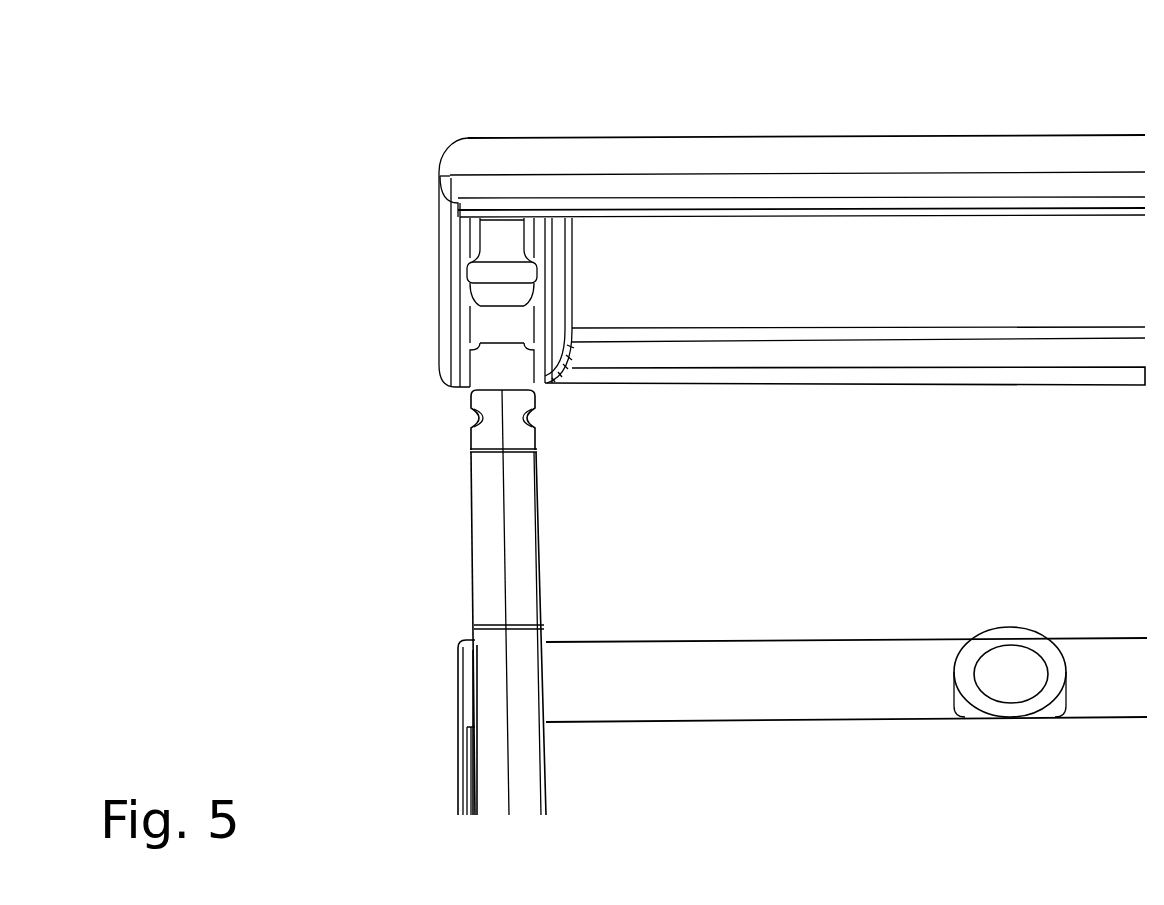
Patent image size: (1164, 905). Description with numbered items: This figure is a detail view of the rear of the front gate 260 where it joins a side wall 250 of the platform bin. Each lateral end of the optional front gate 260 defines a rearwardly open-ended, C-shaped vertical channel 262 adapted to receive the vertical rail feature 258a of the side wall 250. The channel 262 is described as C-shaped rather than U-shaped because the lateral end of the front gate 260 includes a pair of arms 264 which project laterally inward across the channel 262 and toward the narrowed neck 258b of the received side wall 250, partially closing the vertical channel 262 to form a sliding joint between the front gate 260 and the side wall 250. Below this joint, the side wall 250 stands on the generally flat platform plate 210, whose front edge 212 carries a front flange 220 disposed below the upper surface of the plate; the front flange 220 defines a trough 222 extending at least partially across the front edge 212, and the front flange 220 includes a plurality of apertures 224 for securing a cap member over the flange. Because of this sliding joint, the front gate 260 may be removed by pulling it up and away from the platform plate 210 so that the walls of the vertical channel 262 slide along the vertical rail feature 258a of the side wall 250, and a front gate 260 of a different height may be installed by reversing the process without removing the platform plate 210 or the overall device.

The front gate 260 is at (787, 160).
The vertical channel 262 is at (500, 270).
The arms 264 is at (480, 330).
The vertical rail feature 258a is at (475, 407).
The narrowed neck 258b is at (472, 420).
The side wall 250 is at (463, 528).
The front flange 220 is at (455, 670).
The front edge 212 is at (467, 725).
The platform plate 210 is at (455, 783).
The trough 222 is at (1104, 668).
The apertures 224 is at (1005, 660).